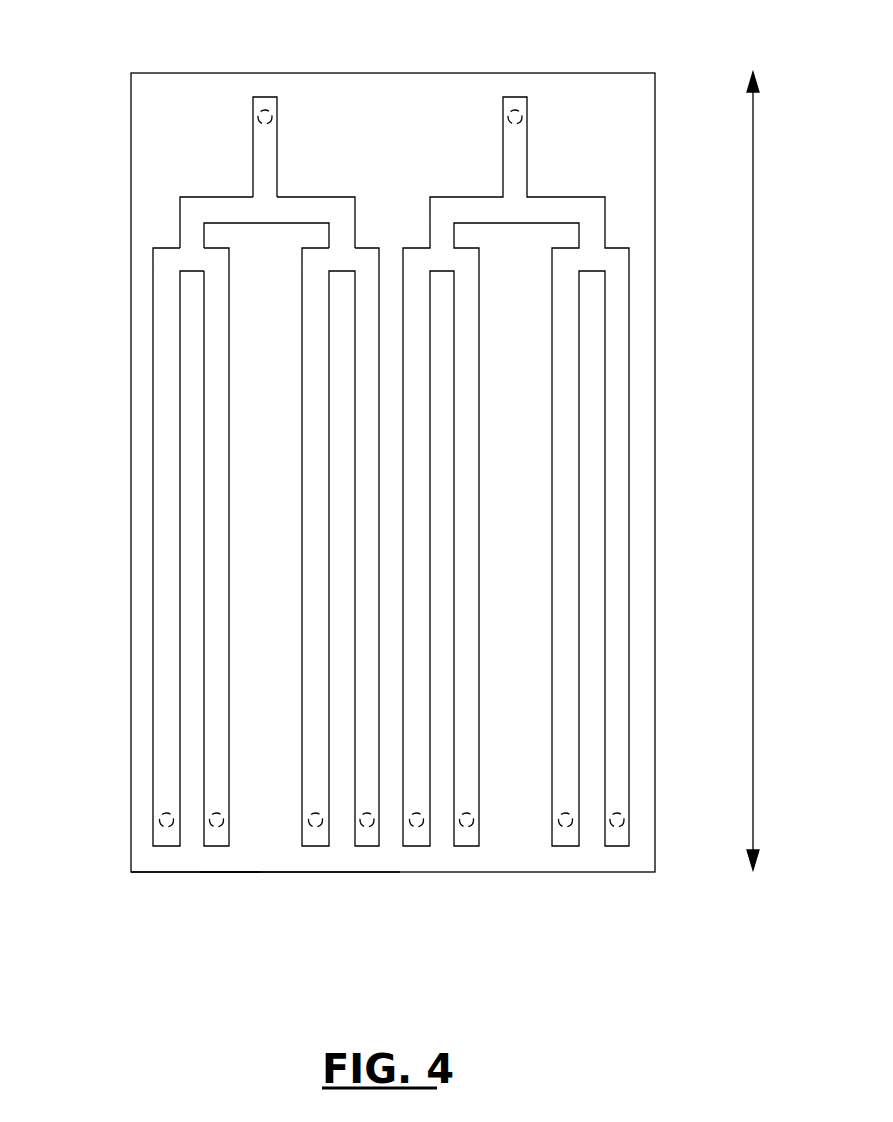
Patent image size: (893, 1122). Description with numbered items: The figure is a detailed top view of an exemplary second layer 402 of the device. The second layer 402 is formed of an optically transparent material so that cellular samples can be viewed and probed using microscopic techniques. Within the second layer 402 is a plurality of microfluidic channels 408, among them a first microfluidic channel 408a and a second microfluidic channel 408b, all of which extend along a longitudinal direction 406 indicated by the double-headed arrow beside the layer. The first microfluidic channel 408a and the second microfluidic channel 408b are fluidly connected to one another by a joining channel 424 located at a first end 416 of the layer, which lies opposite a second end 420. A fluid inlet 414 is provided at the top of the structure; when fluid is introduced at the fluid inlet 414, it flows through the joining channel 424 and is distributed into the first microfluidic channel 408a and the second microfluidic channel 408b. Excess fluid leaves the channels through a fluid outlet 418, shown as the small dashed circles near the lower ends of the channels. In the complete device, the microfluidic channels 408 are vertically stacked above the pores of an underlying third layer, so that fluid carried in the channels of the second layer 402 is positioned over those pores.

The second layer 402 is at (278, 872).
The longitudinal direction 406 is at (753, 796).
The microfluidic channels 408 is at (613, 310).
The first microfluidic channel 408a is at (165, 338).
The second microfluidic channel 408b is at (215, 437).
The fluid inlet 414 is at (267, 138).
The first end 416 is at (194, 73).
The fluid outlet 418 is at (466, 827).
The second end 420 is at (203, 872).
The joining channel 424 is at (232, 209).